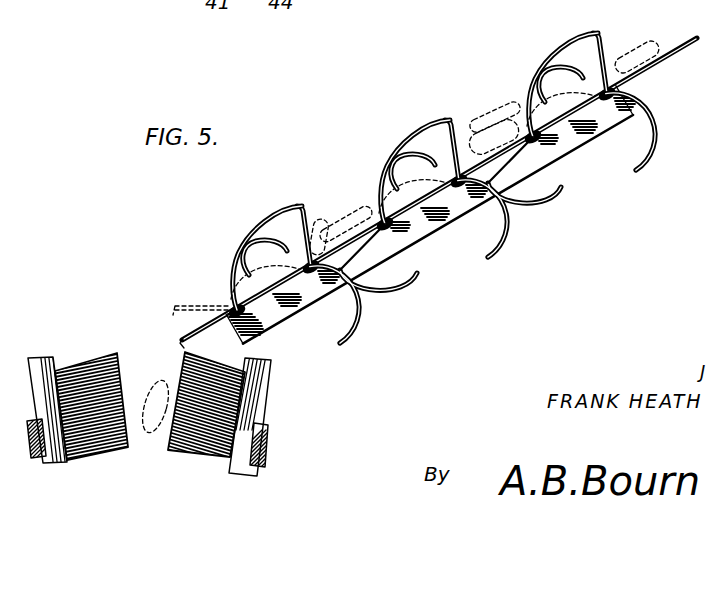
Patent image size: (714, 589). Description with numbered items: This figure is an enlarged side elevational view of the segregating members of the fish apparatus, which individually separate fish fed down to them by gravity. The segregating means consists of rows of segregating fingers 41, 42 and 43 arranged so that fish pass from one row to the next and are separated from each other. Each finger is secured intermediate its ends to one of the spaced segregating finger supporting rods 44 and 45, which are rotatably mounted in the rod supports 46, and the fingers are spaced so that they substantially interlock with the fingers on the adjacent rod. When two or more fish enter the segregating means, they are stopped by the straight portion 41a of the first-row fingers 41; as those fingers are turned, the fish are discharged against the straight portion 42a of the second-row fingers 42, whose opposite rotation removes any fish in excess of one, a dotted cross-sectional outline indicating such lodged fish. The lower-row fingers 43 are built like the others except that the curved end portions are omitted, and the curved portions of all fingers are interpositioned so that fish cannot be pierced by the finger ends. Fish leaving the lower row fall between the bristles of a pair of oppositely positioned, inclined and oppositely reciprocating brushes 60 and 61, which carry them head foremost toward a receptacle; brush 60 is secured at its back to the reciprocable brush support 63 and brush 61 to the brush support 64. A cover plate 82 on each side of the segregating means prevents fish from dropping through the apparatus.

The segregating finger 41 is at (298, 205).
The straight portion 41a is at (305, 210).
The segregating finger 42 is at (383, 288).
The straight portion 42a is at (369, 241).
The segregating finger 43 is at (229, 267).
The segregating finger supporting rod 44 is at (312, 274).
The segregating finger supporting rod 45 is at (249, 320).
The rod support 46 is at (611, 125).
The cover plate 82 is at (679, 45).
The brush 60 is at (253, 407).
The brush 61 is at (47, 357).
The brush support 63 is at (267, 439).
The brush support 64 is at (39, 459).